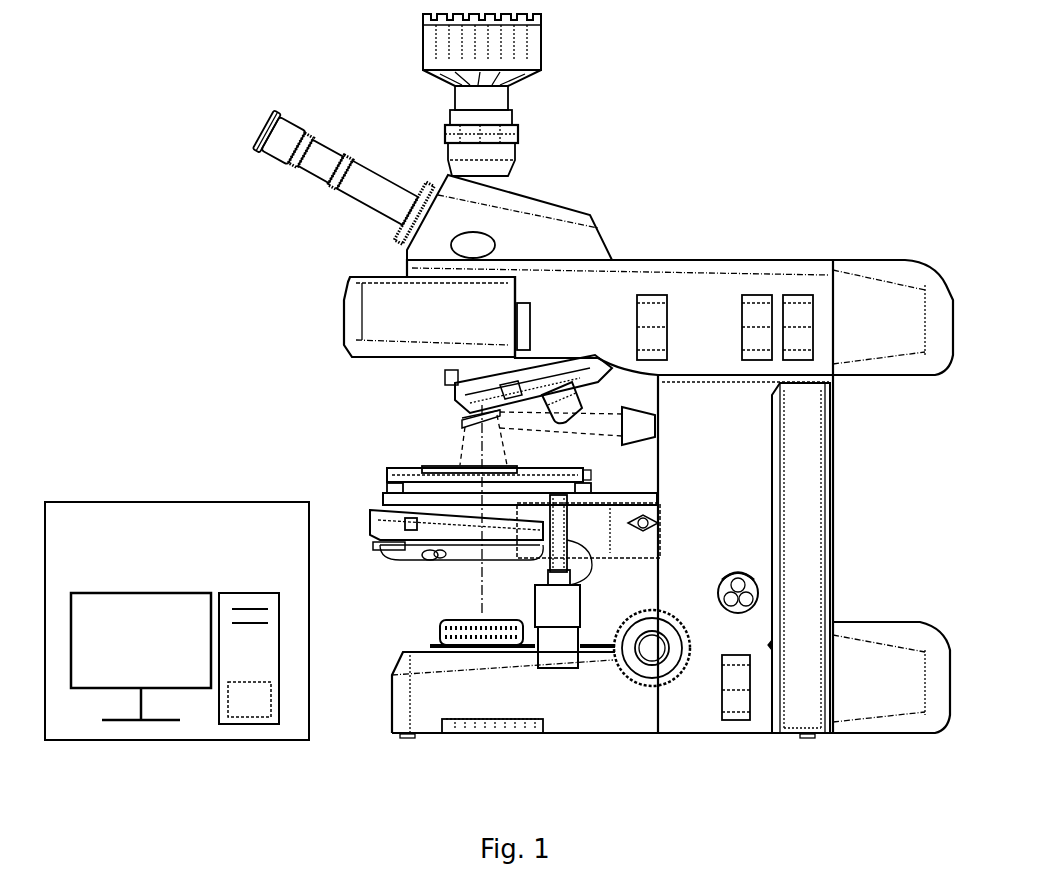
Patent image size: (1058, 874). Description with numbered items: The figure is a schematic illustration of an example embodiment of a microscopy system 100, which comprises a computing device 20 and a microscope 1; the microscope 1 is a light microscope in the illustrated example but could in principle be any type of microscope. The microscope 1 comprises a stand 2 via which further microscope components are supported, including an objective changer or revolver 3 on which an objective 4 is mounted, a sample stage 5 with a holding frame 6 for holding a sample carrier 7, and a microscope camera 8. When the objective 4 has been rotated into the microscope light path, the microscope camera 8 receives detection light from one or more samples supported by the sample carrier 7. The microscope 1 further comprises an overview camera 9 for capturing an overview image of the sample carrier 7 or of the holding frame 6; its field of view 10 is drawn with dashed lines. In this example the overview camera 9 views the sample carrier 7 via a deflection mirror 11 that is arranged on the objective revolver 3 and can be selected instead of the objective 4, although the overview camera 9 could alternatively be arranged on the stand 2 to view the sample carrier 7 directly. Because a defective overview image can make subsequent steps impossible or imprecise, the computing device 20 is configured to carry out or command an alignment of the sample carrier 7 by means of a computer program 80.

The microscopy system 100 is at (822, 106).
The microscope 1 is at (809, 241).
The stand 2 is at (817, 487).
The objective changer/revolver 3 is at (444, 376).
The objective 4 is at (580, 392).
The sample stage 5 is at (388, 491).
The holding frame 6 is at (402, 481).
The sample carrier 7 is at (402, 470).
The microscope camera 8 is at (528, 38).
The overview camera 9 is at (645, 437).
The field of view 10 is at (463, 443).
The deflection mirror 11 is at (465, 423).
The computing device 20 is at (187, 545).
The computer program 80 is at (264, 712).